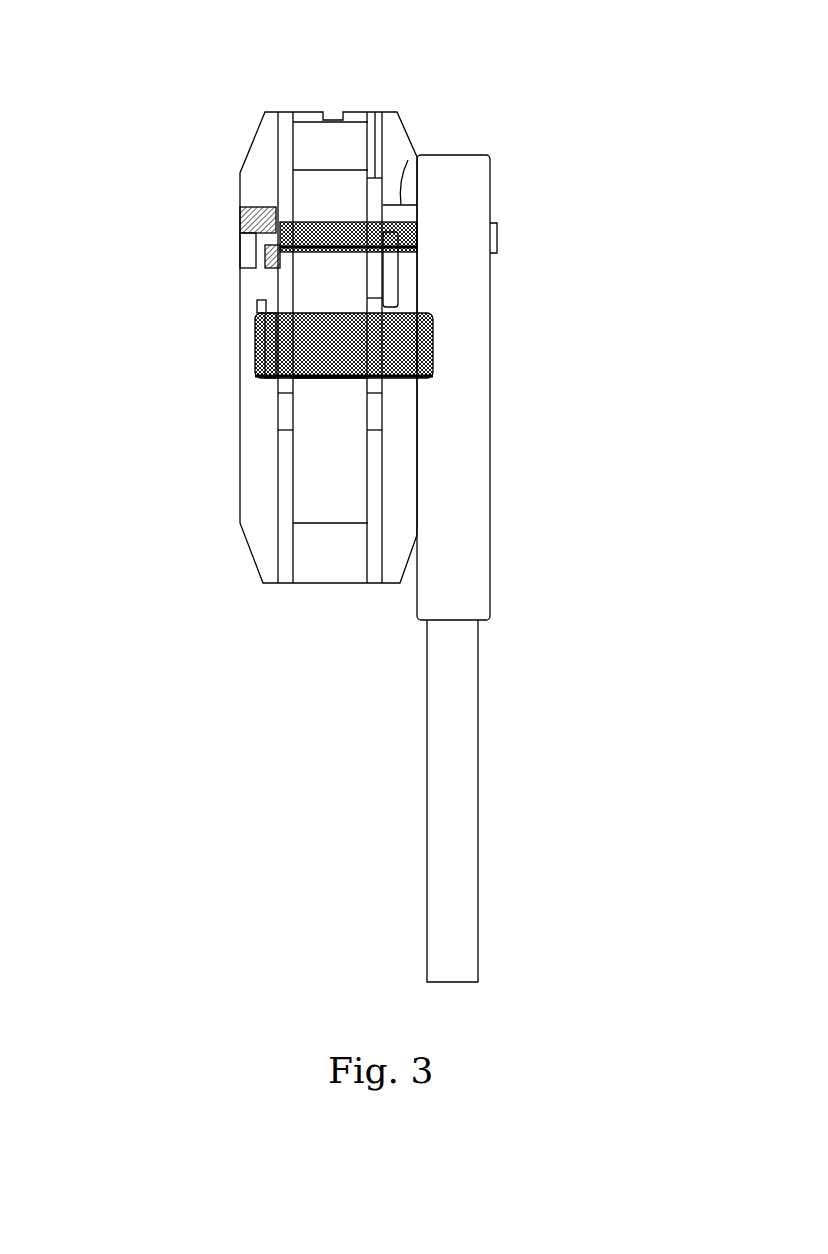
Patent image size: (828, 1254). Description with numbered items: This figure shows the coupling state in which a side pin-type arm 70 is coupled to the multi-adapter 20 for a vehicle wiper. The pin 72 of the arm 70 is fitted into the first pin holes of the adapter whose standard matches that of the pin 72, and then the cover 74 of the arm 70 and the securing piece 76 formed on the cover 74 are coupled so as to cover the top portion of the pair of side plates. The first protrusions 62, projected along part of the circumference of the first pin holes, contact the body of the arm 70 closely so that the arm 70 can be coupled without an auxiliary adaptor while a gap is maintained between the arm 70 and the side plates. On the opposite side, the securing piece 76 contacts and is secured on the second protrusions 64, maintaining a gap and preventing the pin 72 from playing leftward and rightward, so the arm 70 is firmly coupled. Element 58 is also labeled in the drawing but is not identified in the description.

The multi-adapter 20 is at (238, 478).
The latch 58 is at (403, 198).
The first protrusions 62 is at (258, 368).
The second protrusions 64 is at (262, 203).
The side pin-type arm 70 is at (497, 308).
The pin 72 is at (330, 222).
The cover 74 is at (322, 385).
The securing piece 76 is at (260, 303).